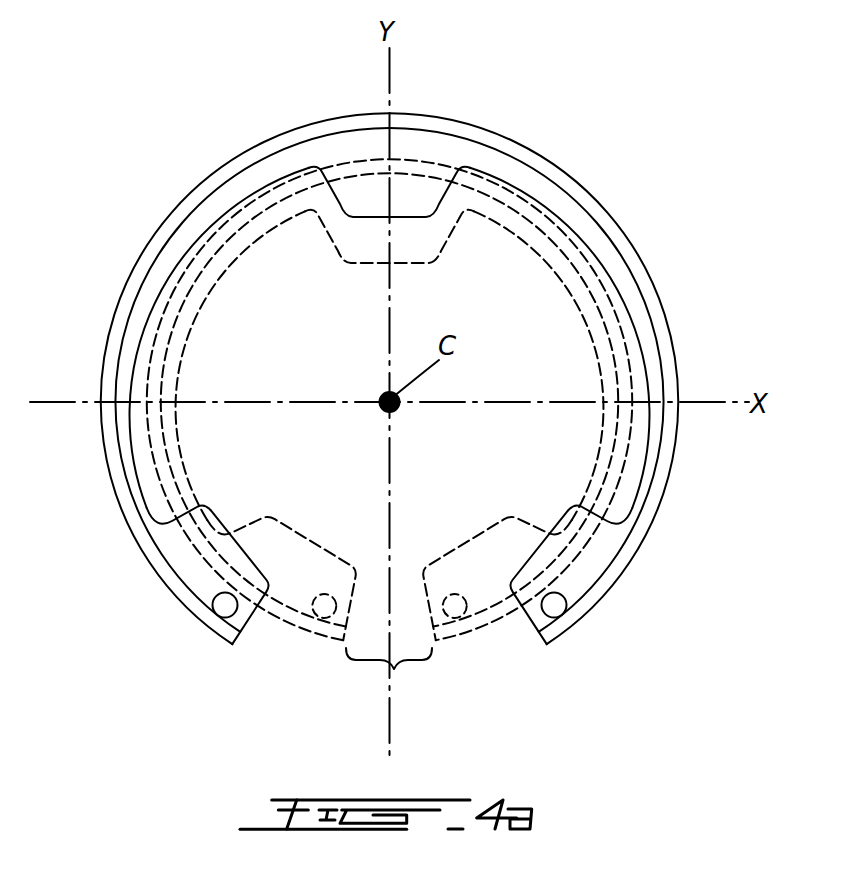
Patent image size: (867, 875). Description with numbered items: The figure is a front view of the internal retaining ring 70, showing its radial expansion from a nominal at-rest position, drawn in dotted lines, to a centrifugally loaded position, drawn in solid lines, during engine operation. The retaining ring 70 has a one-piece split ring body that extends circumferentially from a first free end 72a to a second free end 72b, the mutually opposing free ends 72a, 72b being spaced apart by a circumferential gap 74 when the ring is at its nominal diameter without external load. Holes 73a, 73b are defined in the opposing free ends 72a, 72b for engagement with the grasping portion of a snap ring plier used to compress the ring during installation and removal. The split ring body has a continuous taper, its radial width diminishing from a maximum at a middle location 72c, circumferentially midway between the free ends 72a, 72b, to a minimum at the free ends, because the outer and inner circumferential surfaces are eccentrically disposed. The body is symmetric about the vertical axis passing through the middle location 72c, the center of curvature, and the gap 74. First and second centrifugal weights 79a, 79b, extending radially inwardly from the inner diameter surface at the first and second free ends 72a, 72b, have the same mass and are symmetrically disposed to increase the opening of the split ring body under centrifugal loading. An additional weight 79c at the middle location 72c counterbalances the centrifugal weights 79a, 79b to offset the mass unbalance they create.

The internal retaining ring 70 is at (630, 370).
The first free end 72a is at (228, 642).
The second free end 72b is at (553, 642).
The middle location 72c is at (393, 111).
The hole 73a is at (225, 605).
The hole 73b is at (556, 605).
The circumferential gap 74 is at (474, 140).
The first centrifugal weight 79a is at (216, 513).
The second centrifugal weight 79b is at (563, 513).
The additional weight 79c is at (364, 203).